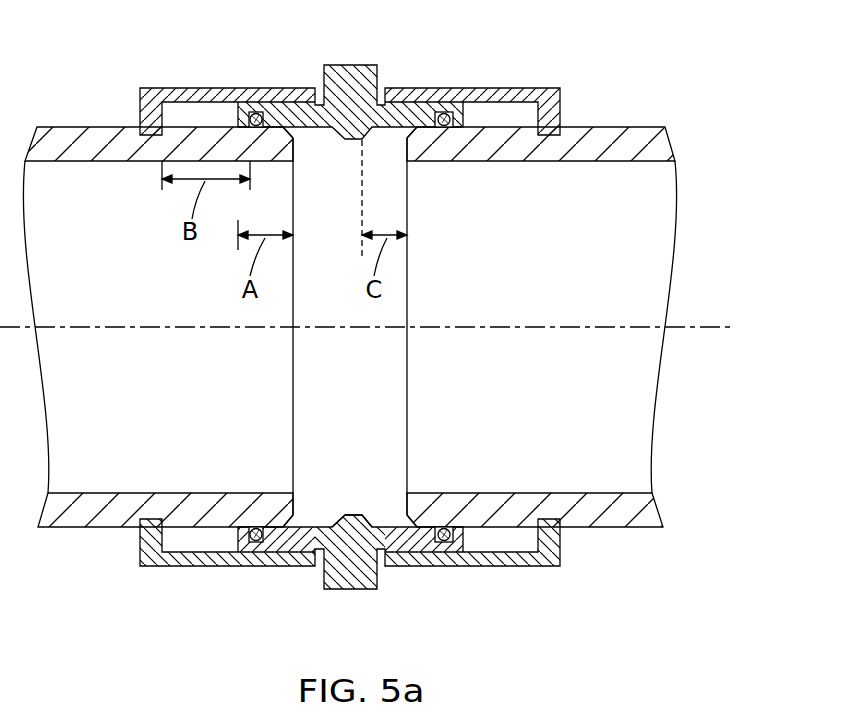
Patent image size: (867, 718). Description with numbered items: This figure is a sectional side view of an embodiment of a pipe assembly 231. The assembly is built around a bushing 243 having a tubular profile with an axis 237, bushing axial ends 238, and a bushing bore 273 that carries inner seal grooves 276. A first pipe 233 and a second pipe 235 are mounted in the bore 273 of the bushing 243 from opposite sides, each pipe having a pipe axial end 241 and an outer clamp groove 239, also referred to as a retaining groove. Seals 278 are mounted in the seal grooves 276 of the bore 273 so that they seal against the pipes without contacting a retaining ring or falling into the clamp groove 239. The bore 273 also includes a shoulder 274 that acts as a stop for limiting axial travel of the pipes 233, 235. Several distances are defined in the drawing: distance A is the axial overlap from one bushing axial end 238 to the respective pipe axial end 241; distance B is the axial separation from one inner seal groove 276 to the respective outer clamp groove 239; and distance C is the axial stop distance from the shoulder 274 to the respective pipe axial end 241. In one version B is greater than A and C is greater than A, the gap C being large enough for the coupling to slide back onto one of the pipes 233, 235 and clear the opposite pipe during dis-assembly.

The pipe assembly 231 is at (193, 594).
The first pipe 233 is at (67, 522).
The second pipe 235 is at (633, 522).
The axis 237 is at (708, 321).
The bushing axial end 238 is at (238, 124).
The outer clamp groove 239 is at (140, 128).
The pipe axial end 241 is at (294, 142).
The bushing 243 is at (360, 72).
The bushing bore 273 is at (311, 130).
The shoulder 274 is at (370, 527).
The seal groove 276 is at (253, 117).
The seal 278 is at (254, 118).